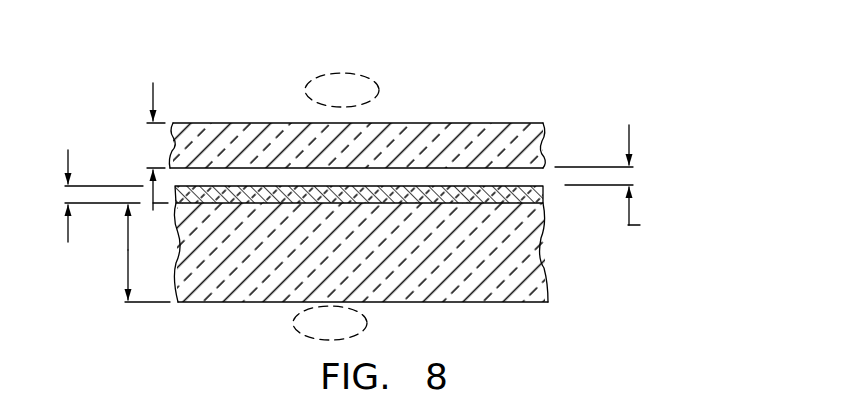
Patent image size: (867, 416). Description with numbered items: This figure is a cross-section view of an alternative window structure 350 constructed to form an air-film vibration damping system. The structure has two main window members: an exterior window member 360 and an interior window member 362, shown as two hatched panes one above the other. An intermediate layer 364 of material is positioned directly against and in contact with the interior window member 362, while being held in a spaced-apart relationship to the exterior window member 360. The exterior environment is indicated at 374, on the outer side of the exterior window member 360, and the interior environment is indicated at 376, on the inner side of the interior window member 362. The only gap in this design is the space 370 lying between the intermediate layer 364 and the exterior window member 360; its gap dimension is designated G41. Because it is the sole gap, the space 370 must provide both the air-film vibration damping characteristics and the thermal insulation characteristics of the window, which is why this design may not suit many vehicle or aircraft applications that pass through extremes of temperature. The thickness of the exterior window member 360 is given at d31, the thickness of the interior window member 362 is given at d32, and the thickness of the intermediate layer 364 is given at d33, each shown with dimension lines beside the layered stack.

The window structure 350 is at (175, 64).
The exterior window member 360 is at (362, 159).
The interior window member 362 is at (355, 249).
The intermediate layer 364 is at (543, 201).
The space 370 is at (527, 176).
The exterior environment 374 is at (342, 90).
The interior environment 376 is at (330, 323).
The thickness of the exterior window d31 is at (153, 94).
The thickness of the interior window structure d32 is at (128, 285).
The thickness of the intermediate layer d33 is at (68, 152).
The gap dimension G41 is at (640, 225).